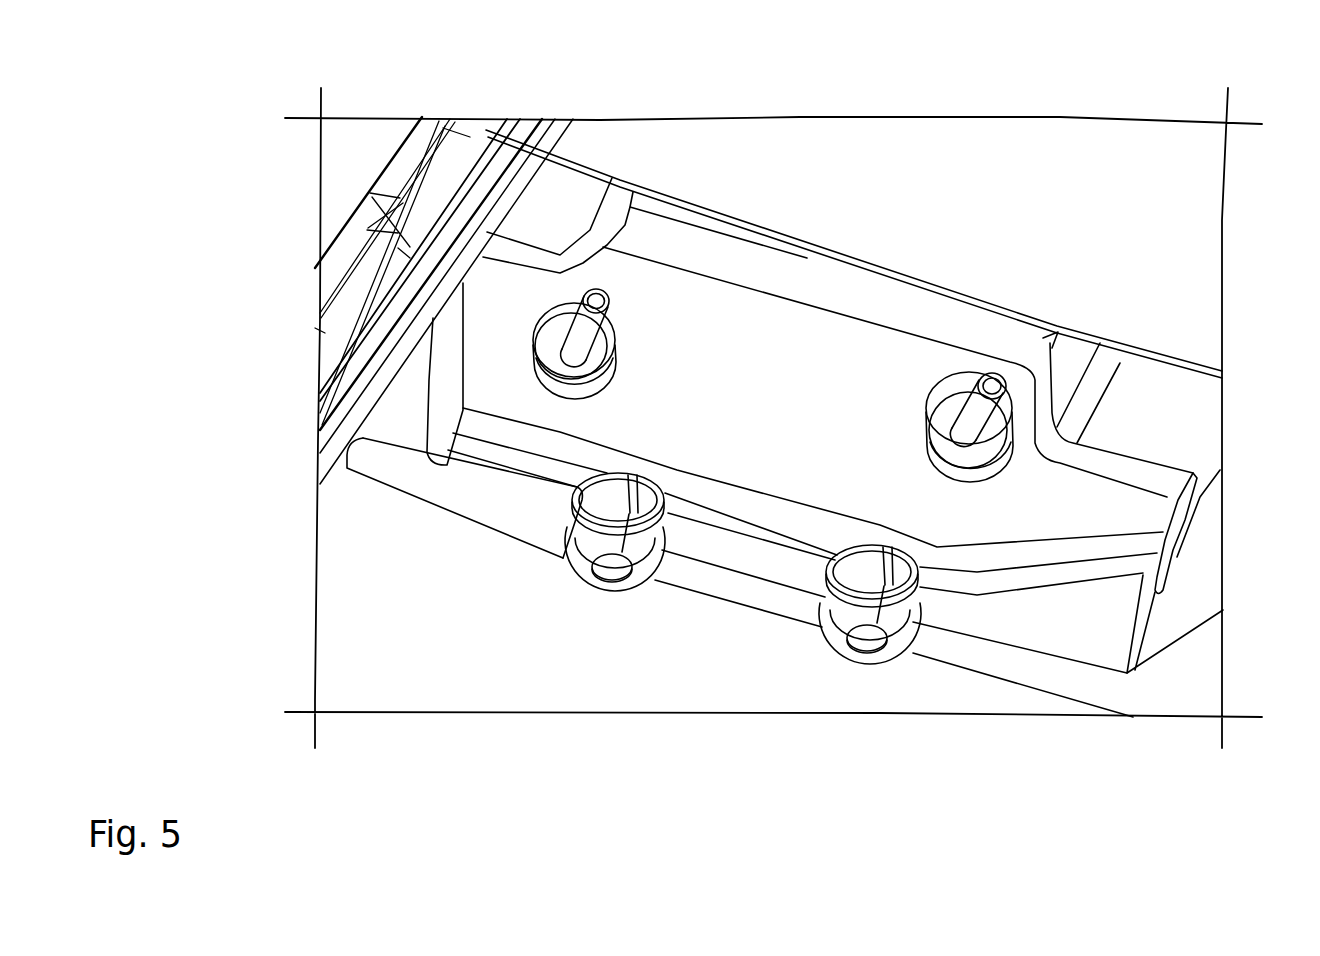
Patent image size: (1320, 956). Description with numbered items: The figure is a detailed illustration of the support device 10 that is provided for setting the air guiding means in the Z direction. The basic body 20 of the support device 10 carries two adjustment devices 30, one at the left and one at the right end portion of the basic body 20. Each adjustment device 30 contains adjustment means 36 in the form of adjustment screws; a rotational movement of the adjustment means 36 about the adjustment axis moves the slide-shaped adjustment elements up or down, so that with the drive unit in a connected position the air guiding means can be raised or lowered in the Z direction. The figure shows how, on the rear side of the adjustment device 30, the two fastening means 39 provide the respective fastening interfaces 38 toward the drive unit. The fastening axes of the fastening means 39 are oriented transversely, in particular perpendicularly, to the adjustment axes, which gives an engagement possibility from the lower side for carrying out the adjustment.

The support device 10 is at (248, 473).
The basic body 20 is at (355, 229).
The adjustment device 30 is at (488, 470).
The adjustment means 36 is at (845, 633).
The fastening interface 38 is at (517, 341).
The fastening means 39 is at (583, 314).